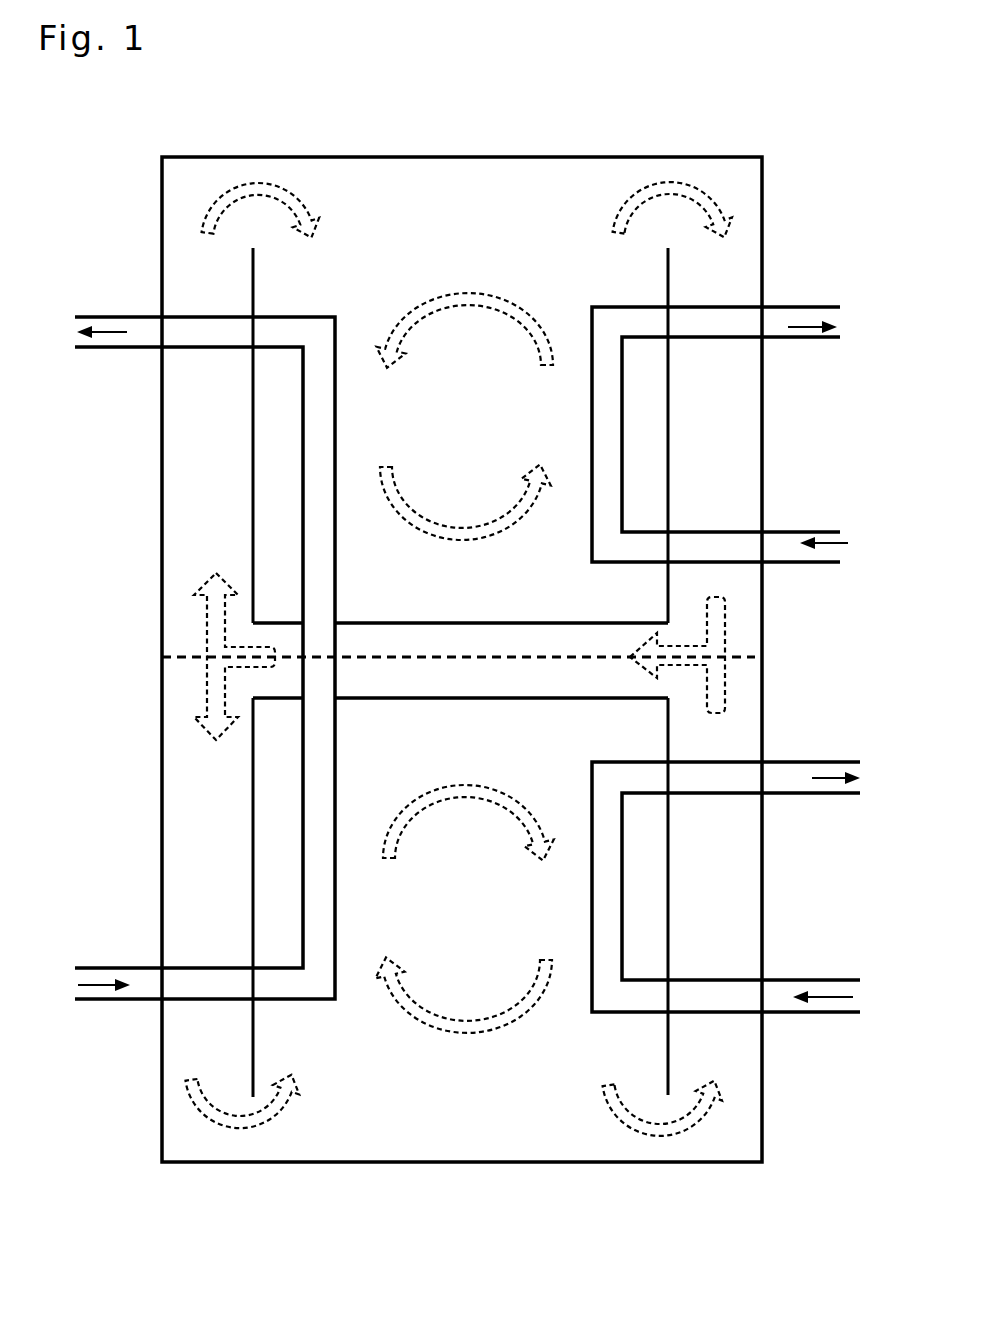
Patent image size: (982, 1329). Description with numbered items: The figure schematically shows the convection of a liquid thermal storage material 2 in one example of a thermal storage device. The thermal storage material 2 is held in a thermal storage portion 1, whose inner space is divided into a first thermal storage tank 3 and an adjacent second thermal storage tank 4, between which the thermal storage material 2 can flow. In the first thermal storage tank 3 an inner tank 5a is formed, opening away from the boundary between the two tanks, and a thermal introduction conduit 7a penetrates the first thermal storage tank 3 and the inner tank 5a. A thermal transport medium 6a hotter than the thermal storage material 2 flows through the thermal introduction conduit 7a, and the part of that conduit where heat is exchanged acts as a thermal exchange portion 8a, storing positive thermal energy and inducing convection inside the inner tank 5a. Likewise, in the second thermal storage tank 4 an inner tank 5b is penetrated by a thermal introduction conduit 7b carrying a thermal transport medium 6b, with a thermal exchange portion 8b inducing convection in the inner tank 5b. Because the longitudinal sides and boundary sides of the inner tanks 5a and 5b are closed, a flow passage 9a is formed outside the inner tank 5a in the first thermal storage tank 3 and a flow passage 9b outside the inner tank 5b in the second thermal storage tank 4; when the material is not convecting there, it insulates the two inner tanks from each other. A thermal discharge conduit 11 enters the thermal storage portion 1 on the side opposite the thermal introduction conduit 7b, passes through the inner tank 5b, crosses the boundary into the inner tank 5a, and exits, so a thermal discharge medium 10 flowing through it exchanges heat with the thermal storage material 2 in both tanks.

The thermal storage portion 1 is at (334, 145).
The thermal storage material 2 is at (470, 178).
The first thermal storage tank 3 is at (577, 173).
The second thermal storage tank 4 is at (727, 1138).
The inner tank 5a is at (650, 280).
The inner tank 5b is at (270, 913).
The thermal transport medium 6a is at (812, 325).
The thermal transport medium 6b is at (845, 772).
The thermal introduction conduit 7a is at (787, 532).
The thermal introduction conduit 7b is at (795, 1013).
The thermal exchange portion 8a is at (623, 403).
The thermal exchange portion 8b is at (622, 917).
The flow passage 9a is at (195, 487).
The flow passage 9b is at (193, 875).
The thermal discharge medium 10 is at (103, 328).
The thermal discharge conduit 11 is at (137, 1002).